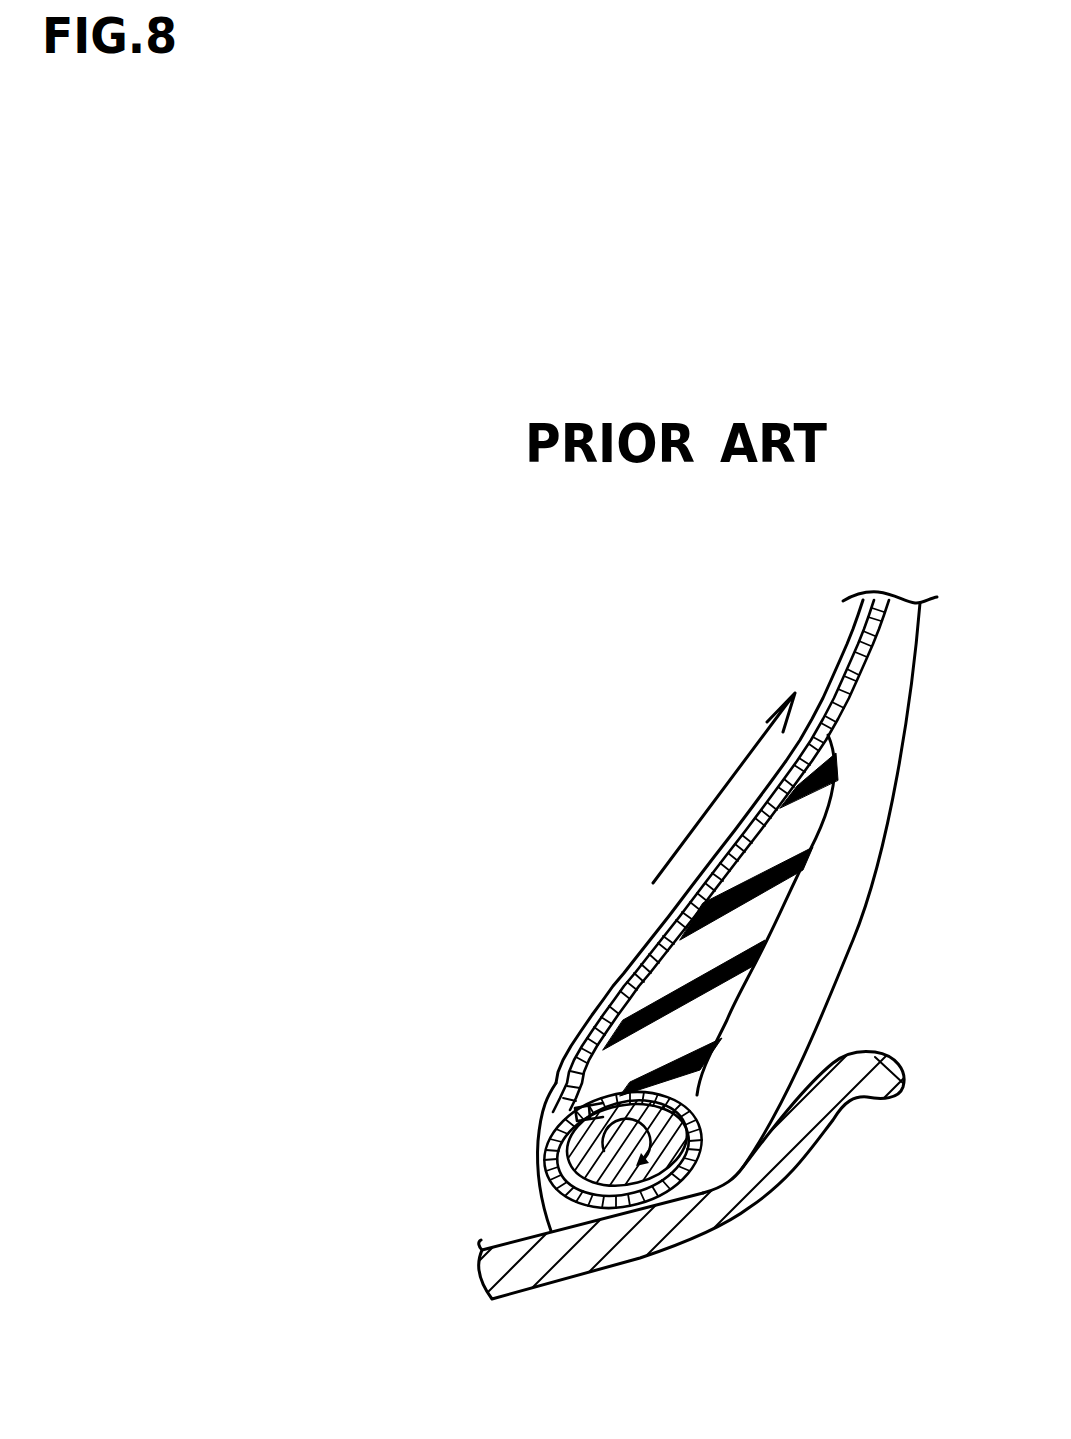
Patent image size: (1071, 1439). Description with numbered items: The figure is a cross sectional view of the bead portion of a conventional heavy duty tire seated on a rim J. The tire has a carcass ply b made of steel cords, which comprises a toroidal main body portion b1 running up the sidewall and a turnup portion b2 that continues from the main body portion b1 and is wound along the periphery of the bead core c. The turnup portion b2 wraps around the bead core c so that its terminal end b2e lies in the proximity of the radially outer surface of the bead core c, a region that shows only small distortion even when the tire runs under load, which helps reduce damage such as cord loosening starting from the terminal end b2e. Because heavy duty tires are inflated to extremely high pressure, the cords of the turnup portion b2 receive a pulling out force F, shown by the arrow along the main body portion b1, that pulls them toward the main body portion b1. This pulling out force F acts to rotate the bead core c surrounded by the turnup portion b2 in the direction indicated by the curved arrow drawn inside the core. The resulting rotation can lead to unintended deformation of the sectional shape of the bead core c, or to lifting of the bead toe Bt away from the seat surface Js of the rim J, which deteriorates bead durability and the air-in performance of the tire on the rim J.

The carcass ply b is at (525, 855).
The main body portion b1 is at (647, 960).
The turnup portions b2 is at (600, 1107).
The terminal ends b2e is at (580, 1121).
The bead toes Bt is at (558, 1231).
The seat surface Js is at (498, 1245).
The rim J is at (775, 1153).
The bead cores c is at (618, 1145).
The pulling out force F is at (724, 777).